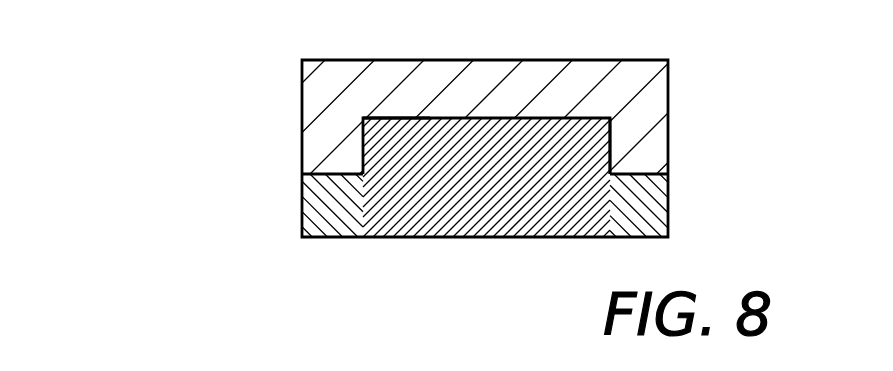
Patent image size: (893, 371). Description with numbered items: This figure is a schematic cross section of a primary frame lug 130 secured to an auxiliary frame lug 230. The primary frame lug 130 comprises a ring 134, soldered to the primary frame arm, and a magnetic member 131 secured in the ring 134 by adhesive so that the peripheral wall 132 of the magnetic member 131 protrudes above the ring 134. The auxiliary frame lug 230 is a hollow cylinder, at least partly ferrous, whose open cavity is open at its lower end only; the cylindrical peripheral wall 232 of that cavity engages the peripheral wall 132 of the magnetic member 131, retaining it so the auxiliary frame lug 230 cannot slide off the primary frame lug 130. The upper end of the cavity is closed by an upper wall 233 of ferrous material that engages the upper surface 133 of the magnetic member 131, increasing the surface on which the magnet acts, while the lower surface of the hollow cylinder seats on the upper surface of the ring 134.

The auxiliary frame lug 230 is at (255, 102).
The upper wall 233 is at (523, 86).
The upper surface 133 is at (415, 117).
The peripheral wall 232 is at (612, 137).
The ring 134 is at (654, 223).
The primary frame lug 130 is at (262, 209).
The magnetic member 131 is at (428, 212).
The peripheral wall 132 is at (607, 150).